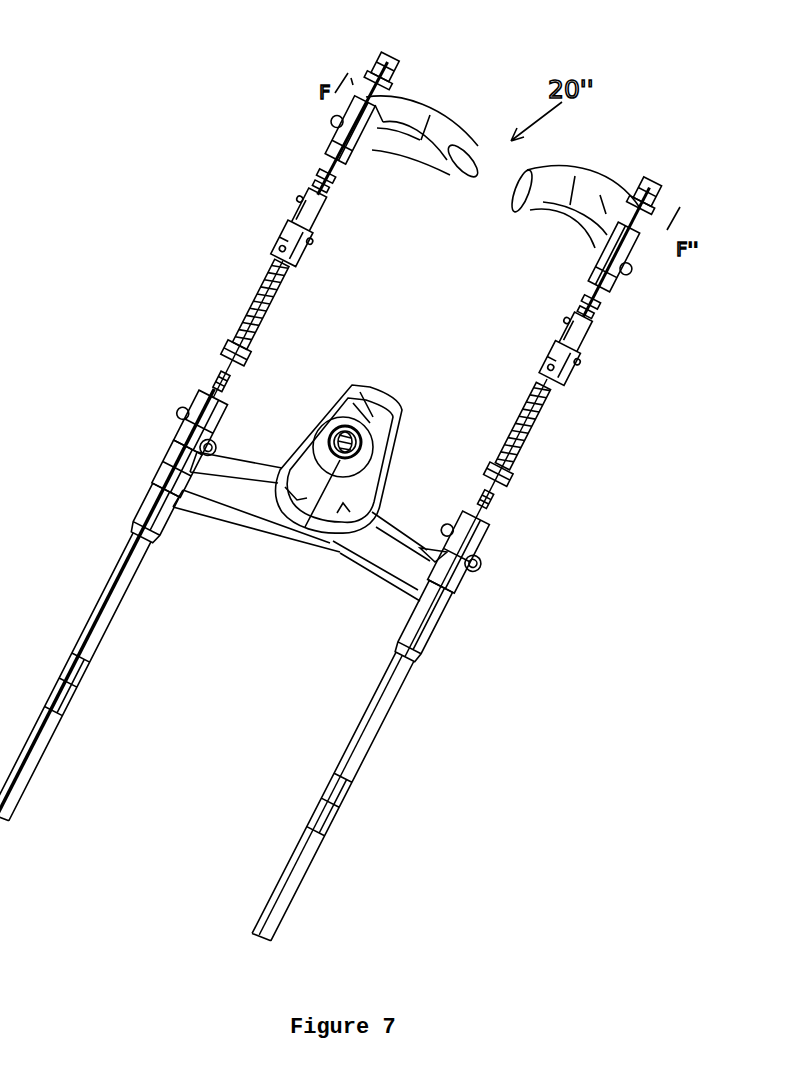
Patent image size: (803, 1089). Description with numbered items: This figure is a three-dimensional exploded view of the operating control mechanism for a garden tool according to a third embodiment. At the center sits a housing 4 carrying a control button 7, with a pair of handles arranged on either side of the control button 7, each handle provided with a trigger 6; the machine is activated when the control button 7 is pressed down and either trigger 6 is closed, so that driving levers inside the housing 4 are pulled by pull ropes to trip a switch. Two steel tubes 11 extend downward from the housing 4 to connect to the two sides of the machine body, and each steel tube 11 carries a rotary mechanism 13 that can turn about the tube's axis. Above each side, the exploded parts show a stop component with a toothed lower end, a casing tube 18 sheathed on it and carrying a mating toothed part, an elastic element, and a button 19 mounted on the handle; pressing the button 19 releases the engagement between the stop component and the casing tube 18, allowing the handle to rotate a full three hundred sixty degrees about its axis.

The housing 4 is at (257, 487).
The trigger 6 is at (391, 150).
The control button 7 is at (348, 427).
The steel tube 11 is at (100, 602).
The rotary mechanism 13 is at (150, 513).
The casing tube 18 is at (290, 222).
The button 19 is at (378, 62).